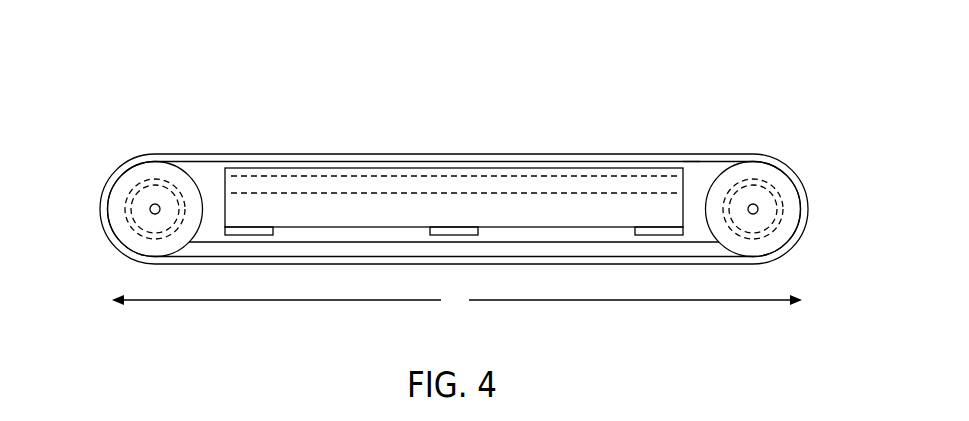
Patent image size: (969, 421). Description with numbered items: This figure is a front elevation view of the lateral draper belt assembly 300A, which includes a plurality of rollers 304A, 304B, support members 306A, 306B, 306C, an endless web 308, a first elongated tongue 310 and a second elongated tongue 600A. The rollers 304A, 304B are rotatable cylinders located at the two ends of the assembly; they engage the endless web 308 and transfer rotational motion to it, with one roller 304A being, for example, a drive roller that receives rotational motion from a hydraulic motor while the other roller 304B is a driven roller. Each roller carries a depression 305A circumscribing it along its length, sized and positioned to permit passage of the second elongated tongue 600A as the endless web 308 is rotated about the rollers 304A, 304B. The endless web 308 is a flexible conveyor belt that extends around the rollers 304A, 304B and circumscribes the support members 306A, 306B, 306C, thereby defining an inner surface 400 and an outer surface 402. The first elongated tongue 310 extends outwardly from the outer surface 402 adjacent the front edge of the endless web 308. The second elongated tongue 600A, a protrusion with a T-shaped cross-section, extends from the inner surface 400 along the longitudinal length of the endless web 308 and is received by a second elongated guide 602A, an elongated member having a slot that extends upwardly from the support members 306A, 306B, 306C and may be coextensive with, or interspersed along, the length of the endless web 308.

The lateral draper belt assembly 300A is at (776, 110).
The first elongated tongue 310 is at (100, 222).
The outer surface 402 is at (545, 156).
The second elongated tongue 600A is at (205, 176).
The second elongated guide 602A is at (268, 202).
The roller 304A is at (132, 243).
The roller 304B is at (777, 243).
The depression 305A is at (122, 185).
The endless web 308 is at (298, 162).
The support member 306A is at (248, 235).
The support member 306B is at (445, 235).
The support member 306C is at (658, 235).
The inner surface 400 is at (690, 170).